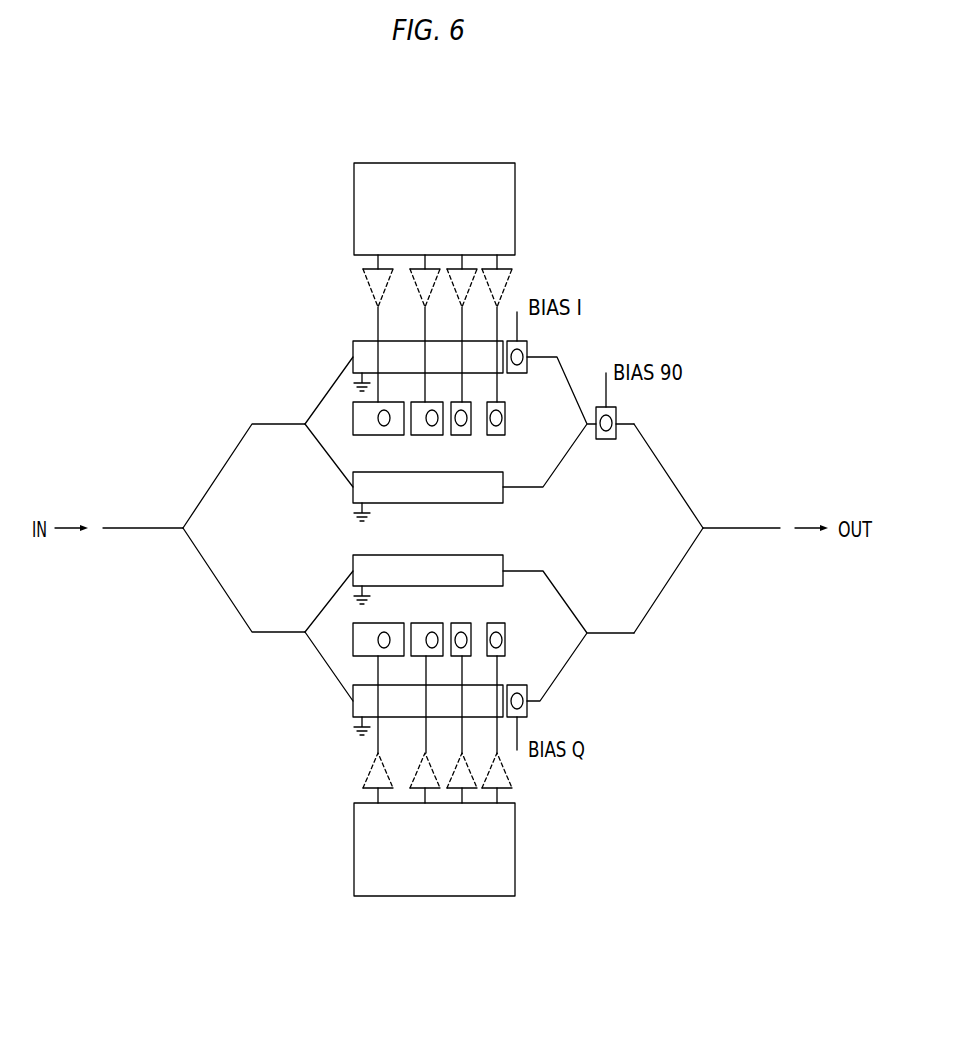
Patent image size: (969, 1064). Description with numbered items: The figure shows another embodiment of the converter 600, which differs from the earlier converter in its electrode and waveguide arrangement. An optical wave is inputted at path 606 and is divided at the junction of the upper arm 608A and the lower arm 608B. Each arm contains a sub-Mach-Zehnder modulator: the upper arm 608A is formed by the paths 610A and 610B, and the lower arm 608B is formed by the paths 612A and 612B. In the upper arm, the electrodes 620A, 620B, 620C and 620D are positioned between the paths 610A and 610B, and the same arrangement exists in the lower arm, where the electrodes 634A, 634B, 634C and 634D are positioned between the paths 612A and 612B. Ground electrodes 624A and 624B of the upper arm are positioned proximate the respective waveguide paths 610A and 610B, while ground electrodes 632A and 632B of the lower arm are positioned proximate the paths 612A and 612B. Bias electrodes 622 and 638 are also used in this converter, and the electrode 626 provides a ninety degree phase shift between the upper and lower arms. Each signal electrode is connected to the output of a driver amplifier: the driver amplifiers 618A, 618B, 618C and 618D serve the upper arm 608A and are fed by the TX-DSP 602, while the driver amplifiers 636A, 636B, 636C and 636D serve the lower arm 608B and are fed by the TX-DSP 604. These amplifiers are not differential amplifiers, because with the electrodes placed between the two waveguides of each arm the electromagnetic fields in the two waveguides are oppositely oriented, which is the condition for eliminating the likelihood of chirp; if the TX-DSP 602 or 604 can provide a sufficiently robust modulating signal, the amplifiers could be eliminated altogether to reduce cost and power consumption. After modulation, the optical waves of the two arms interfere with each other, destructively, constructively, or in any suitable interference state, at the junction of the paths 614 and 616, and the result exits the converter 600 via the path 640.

The converter 600 is at (247, 125).
The TX-DSP 602 is at (515, 226).
The TX-DSP 604 is at (515, 866).
The input path 606 is at (138, 531).
The upper arm 608A is at (227, 461).
The lower arm 608B is at (227, 597).
The waveguide path 610A is at (327, 393).
The waveguide path 610B is at (330, 464).
The waveguide path 612A is at (325, 606).
The waveguide path 612B is at (333, 672).
The path 614 is at (660, 460).
The path 616 is at (607, 636).
The driver amplifier 618A is at (362, 283).
The driver amplifier 618B is at (410, 273).
The driver amplifier 618C is at (447, 283).
The driver amplifier 618D is at (510, 283).
The electrode 620A is at (353, 420).
The electrode 620B is at (427, 436).
The electrode 620C is at (466, 436).
The electrode 620D is at (506, 420).
The bias electrode 622 is at (529, 343).
The ground electrode 624A is at (504, 375).
The ground electrode 624B is at (495, 505).
The electrode 626 is at (606, 441).
The ground electrode 632A is at (432, 555).
The ground electrode 632B is at (478, 685).
The electrode 634A is at (353, 645).
The electrode 634B is at (421, 623).
The electrode 634C is at (467, 623).
The electrode 634D is at (506, 645).
The driver amplifier 636A is at (363, 784).
The driver amplifier 636B is at (417, 773).
The driver amplifier 636C is at (443, 787).
The driver amplifier 636D is at (510, 784).
The bias electrode 638 is at (529, 705).
The output path 640 is at (742, 530).